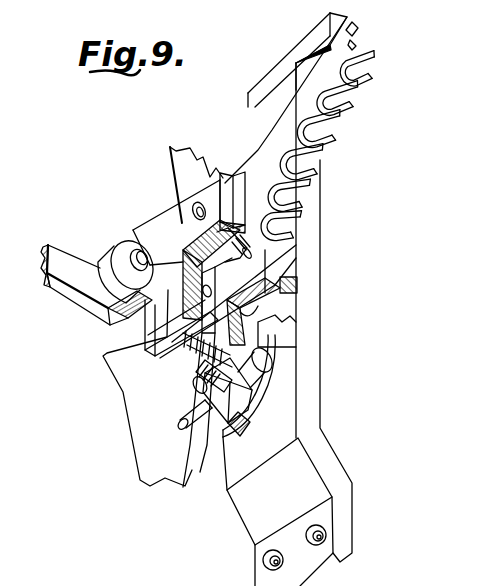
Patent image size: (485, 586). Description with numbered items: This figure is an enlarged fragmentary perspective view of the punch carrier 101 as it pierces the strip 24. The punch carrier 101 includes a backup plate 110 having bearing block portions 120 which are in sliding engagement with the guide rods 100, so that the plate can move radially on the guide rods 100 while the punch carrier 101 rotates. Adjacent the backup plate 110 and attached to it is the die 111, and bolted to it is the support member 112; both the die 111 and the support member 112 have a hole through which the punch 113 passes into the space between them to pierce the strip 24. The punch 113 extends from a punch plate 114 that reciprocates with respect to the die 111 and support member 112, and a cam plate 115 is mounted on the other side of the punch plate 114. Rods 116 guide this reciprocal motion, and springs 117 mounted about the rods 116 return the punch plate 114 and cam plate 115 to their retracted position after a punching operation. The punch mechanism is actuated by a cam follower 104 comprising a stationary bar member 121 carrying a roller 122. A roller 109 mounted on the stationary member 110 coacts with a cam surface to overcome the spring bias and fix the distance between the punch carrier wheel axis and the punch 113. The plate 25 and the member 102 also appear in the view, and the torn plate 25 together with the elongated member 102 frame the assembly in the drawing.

The strip 24 is at (346, 43).
The plate 25 is at (193, 157).
The guide rods 100 is at (180, 421).
The punch carrier 101 is at (151, 332).
The plate 102 is at (293, 44).
The cam follower 104 is at (82, 308).
The roller 109 is at (256, 317).
The backup plate 110 is at (290, 322).
The die 111 is at (270, 270).
The support member 112 is at (250, 238).
The punch 113 is at (213, 243).
The punch plate 114 is at (240, 170).
The cam plate 115 is at (174, 233).
The rods 116 is at (182, 365).
The springs 117 is at (194, 373).
The bearing block portions 120 is at (232, 398).
The stationary bar member 121 is at (68, 257).
The roller 122 is at (104, 265).